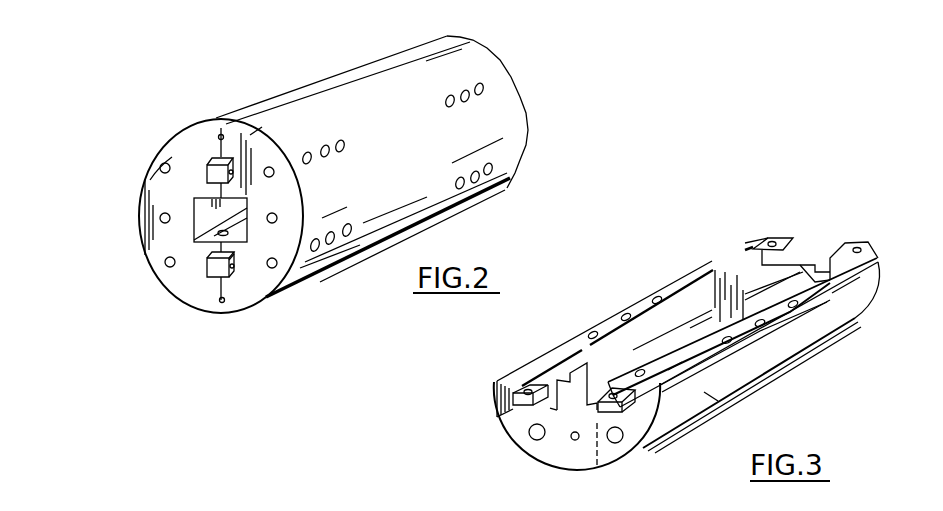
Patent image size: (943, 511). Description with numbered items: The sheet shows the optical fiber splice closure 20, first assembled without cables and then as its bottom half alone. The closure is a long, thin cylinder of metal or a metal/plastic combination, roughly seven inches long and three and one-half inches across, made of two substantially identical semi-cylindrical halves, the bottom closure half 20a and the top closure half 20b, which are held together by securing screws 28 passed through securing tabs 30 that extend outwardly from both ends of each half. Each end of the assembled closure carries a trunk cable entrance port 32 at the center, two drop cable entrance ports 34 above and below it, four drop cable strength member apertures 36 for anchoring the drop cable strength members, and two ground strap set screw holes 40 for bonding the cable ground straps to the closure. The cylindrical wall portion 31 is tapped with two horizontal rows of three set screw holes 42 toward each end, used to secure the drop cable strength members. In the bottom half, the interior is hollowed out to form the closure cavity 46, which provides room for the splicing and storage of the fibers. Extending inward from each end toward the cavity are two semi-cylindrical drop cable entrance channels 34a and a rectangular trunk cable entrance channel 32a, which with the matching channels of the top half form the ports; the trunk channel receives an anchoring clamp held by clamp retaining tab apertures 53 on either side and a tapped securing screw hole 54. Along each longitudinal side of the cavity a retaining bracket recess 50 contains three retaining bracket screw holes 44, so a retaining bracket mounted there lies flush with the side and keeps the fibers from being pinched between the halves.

In FIG. 2, the splice closure 20 is at (180, 97).
In FIG. 2, the bottom closure half 20a is at (172, 157).
In FIG. 3, the bottom closure half 20a is at (637, 283).
In FIG. 2, the top closure half 20b is at (257, 140).
In FIG. 2, the securing screws 28 is at (232, 268).
In FIG. 2, the securing tabs 30 is at (220, 278).
In FIG. 3, the securing tabs 30 is at (517, 405).
In FIG. 2, the cylindrical wall portion 31 is at (409, 163).
In FIG. 3, the cylindrical wall portion 31 is at (708, 387).
In FIG. 2, the trunk cable entrance port 32 is at (214, 218).
In FIG. 3, the trunk cable entrance channel 32a is at (558, 415).
In FIG. 2, the drop cable entrance ports 34 is at (221, 118).
In FIG. 3, the drop cable entrance channels 34a is at (675, 360).
In FIG. 2, the drop cable strength member apertures 36 is at (274, 269).
In FIG. 3, the drop cable strength member apertures 36 is at (615, 443).
In FIG. 2, the ground strap set screw holes 40 is at (160, 218).
In FIG. 3, the ground strap set screw holes 40 is at (575, 440).
In FIG. 2, the set screw holes 42 is at (339, 142).
In FIG. 3, the retaining bracket screw holes 44 is at (792, 306).
In FIG. 3, the closure cavity 46 is at (697, 310).
In FIG. 3, the retaining bracket recess 50 is at (607, 325).
In FIG. 3, the clamp retaining tab apertures 53 is at (570, 362).
In FIG. 3, the securing screw hole 54 is at (573, 370).